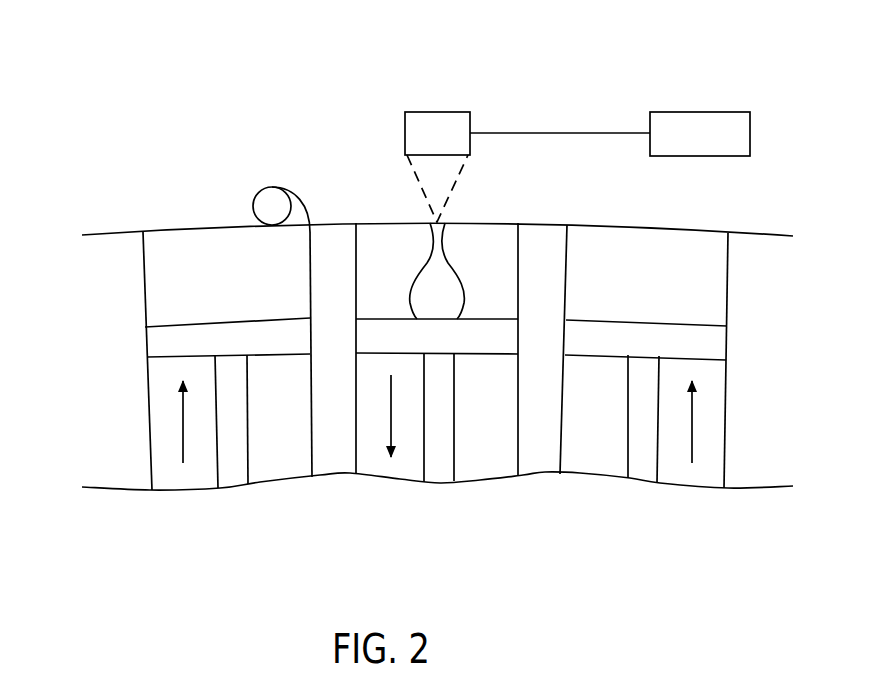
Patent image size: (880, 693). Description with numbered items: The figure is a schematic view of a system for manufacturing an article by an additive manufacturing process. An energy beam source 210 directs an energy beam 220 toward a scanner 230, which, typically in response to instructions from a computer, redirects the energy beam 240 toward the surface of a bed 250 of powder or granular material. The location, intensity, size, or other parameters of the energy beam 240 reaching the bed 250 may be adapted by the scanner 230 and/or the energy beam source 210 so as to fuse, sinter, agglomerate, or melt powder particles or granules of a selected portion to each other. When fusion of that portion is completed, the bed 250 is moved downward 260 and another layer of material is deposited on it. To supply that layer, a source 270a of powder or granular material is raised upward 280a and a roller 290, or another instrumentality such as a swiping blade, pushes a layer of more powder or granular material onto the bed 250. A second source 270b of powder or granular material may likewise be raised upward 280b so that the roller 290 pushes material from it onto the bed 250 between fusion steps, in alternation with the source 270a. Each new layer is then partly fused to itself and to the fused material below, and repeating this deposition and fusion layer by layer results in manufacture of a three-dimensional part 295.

The energy beam source 210 is at (690, 123).
The energy beam 220 is at (553, 136).
The scanner 230 is at (434, 116).
The energy beam 240 is at (411, 182).
The bed of powder or granular material 250 is at (486, 227).
The downward movement of the bed 260 is at (382, 428).
The source of powder or granular material 270a is at (140, 231).
The second source of powder or granular material 270b is at (694, 239).
The upward movement of the source 280a is at (177, 457).
The upward movement of the second source 280b is at (671, 462).
The roller 290 is at (251, 193).
The three-dimensional part 295 is at (452, 300).